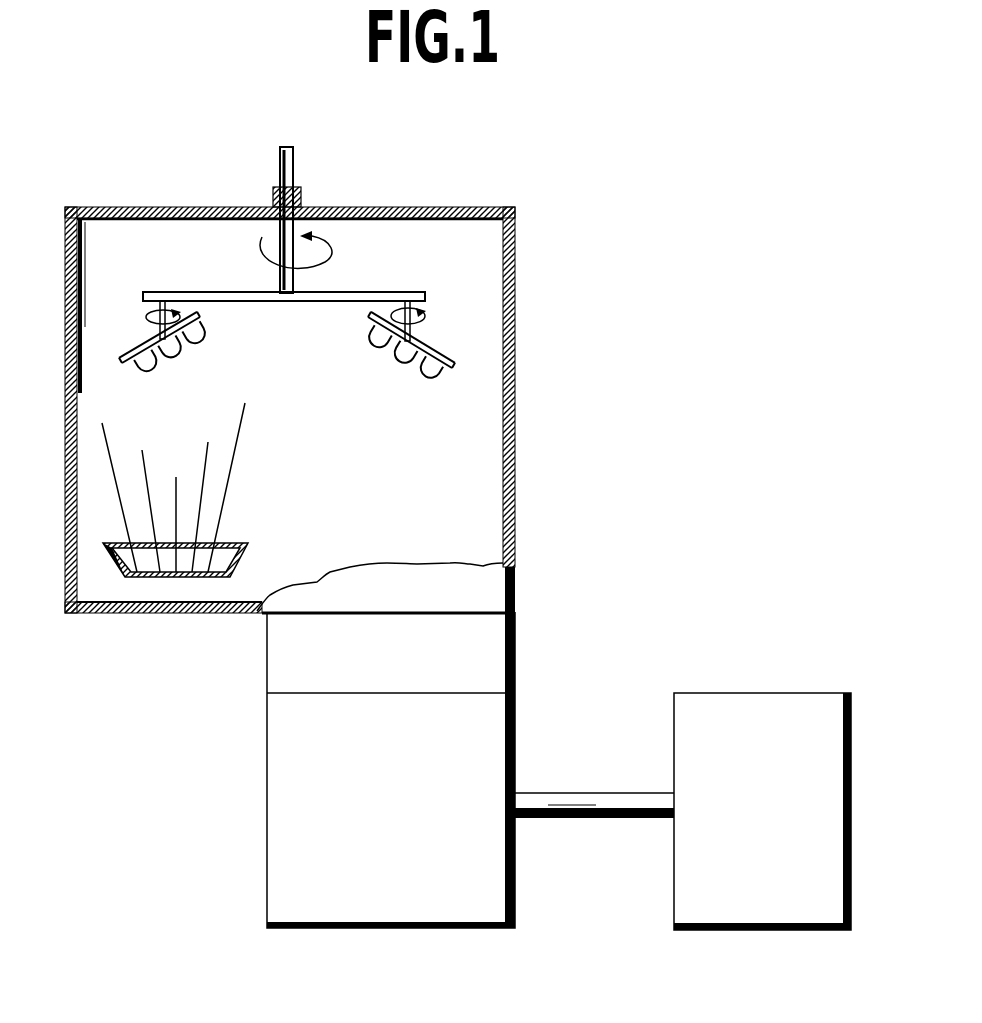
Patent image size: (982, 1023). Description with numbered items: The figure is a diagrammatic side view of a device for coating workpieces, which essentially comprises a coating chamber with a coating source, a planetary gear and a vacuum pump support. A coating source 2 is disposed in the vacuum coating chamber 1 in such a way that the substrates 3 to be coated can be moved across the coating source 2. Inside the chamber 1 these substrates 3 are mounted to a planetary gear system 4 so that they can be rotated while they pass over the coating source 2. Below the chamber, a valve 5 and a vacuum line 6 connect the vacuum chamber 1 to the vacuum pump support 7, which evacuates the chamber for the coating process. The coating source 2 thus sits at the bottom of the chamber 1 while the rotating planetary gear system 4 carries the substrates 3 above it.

The vacuum coating chamber 1 is at (478, 485).
The coating source 2 is at (152, 578).
The substrates 3 is at (440, 370).
The planetary gear system 4 is at (362, 287).
The valve 5 is at (505, 643).
The vacuum line 6 is at (583, 793).
The vacuum pump support 7 is at (747, 705).